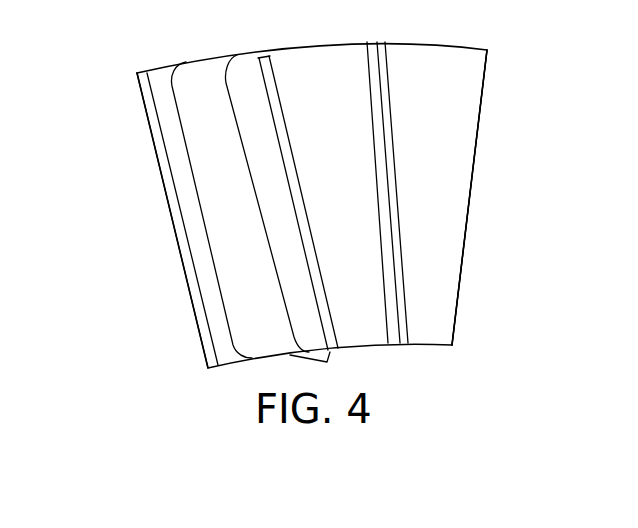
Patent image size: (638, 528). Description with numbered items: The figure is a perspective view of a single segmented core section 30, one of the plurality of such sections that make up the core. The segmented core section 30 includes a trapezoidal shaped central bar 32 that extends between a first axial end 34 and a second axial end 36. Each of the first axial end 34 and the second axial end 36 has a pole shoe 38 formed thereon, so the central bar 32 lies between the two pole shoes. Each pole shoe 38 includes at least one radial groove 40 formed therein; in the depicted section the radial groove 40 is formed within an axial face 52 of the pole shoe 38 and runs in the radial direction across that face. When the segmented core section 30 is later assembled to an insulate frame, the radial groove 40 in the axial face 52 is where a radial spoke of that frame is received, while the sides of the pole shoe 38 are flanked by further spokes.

The segmented core section 30 is at (165, 357).
The trapezoidal shaped central bar 32 is at (215, 155).
The first axial end 34 is at (442, 86).
The second axial end 36 is at (170, 228).
The pole shoe 38 is at (150, 95).
The radial groove 40 is at (373, 69).
The axial face 52 is at (440, 220).